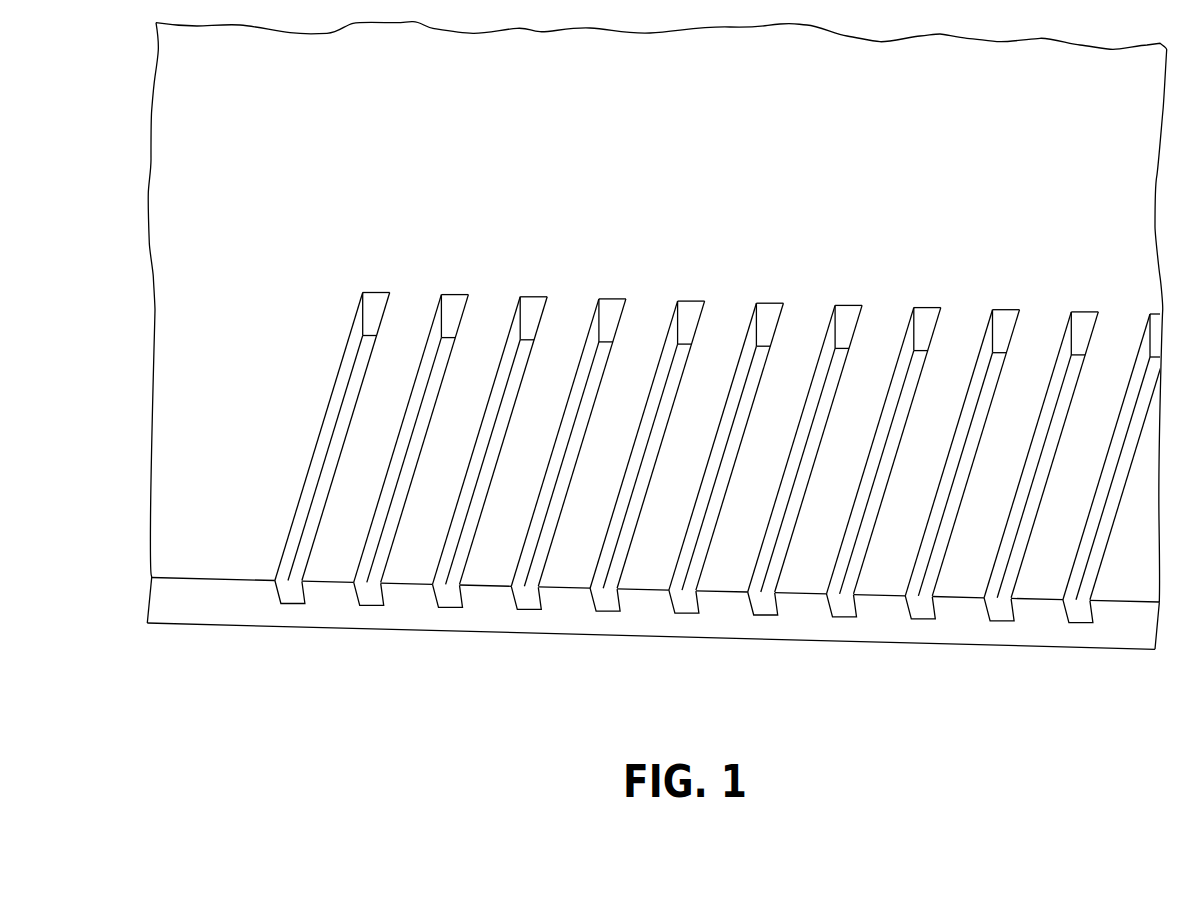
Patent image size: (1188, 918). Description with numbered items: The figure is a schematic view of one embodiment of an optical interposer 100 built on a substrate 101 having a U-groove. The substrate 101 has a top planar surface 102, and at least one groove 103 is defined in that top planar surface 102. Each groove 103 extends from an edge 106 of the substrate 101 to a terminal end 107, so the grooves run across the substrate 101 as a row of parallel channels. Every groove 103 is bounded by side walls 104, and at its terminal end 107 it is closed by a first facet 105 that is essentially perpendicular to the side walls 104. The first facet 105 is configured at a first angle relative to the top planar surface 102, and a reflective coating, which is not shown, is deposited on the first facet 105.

The optical interposer 100 is at (662, 487).
The substrate 101 is at (170, 605).
The top planar surface 102 is at (317, 565).
The groove 103 is at (370, 594).
The side walls 104 is at (524, 590).
The first facet 105 is at (612, 312).
The edge 106 is at (577, 622).
The terminal end 107 is at (599, 322).